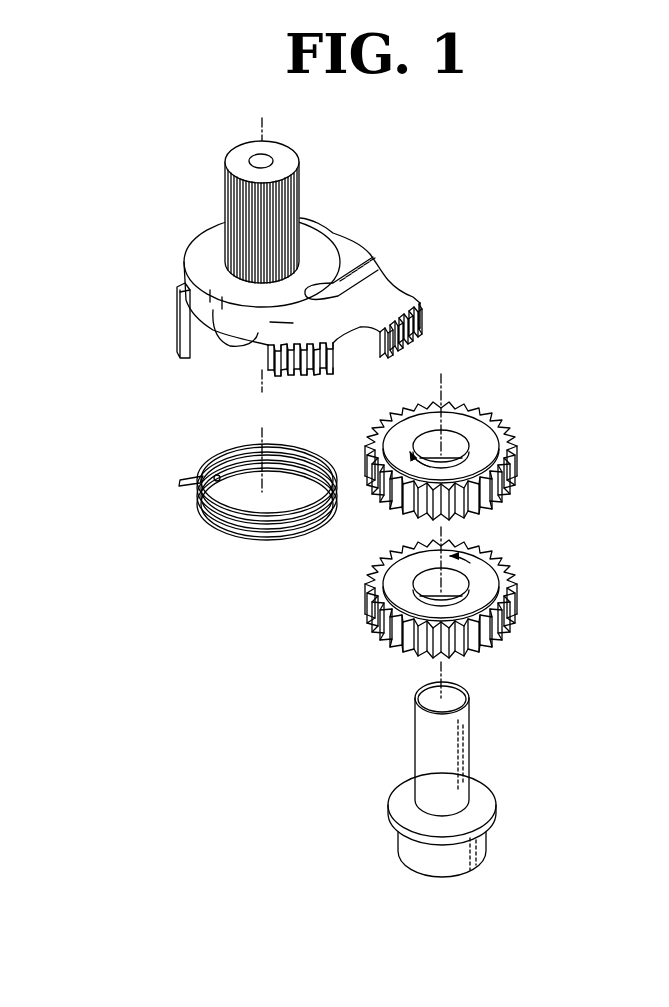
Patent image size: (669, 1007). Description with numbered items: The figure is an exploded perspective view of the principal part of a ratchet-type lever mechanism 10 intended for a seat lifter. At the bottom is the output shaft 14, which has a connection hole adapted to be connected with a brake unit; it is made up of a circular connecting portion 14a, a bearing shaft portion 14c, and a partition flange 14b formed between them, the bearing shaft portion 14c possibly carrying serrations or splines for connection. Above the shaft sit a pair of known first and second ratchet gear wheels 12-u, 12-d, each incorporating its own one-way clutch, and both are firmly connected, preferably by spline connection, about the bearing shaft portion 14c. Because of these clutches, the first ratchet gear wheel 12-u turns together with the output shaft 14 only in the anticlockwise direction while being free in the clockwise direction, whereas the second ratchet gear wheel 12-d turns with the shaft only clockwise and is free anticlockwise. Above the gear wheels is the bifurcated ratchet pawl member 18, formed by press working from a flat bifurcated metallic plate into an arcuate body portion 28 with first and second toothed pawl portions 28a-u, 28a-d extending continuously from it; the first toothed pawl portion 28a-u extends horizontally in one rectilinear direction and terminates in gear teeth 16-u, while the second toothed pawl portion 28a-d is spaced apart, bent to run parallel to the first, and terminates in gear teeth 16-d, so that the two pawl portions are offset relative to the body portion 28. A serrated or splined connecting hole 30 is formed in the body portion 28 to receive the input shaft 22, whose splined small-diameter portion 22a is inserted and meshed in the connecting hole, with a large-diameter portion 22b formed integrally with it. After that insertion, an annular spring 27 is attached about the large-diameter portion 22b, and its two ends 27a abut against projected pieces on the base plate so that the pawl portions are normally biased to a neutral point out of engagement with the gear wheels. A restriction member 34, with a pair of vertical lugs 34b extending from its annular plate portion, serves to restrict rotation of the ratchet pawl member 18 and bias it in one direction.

The ratchet-type lever mechanism 10 is at (490, 190).
The first ratchet gear wheel 12-u is at (494, 468).
The second ratchet gear wheel 12-d is at (488, 611).
The output shaft 14 is at (449, 780).
The circular connecting portion 14a is at (427, 860).
The partition flange 14b is at (487, 833).
The bearing shaft portion 14c is at (427, 750).
The gear teeth 16-u is at (313, 362).
The gear teeth 16-d is at (413, 330).
The bifurcated ratchet pawl member 18 is at (367, 243).
The input shaft 22 is at (303, 192).
The splined small-diameter portion 22a is at (300, 217).
The large-diameter portion 22b is at (223, 350).
The annular spring 27 is at (258, 540).
The spring end 27a is at (205, 477).
The body portion 28 is at (213, 253).
The second toothed pawl portion 28a-d is at (393, 307).
The first toothed pawl portion 28a-u is at (293, 323).
The connecting hole 30 is at (236, 264).
The restriction member 34 is at (153, 302).
The vertical lugs 34b is at (178, 338).